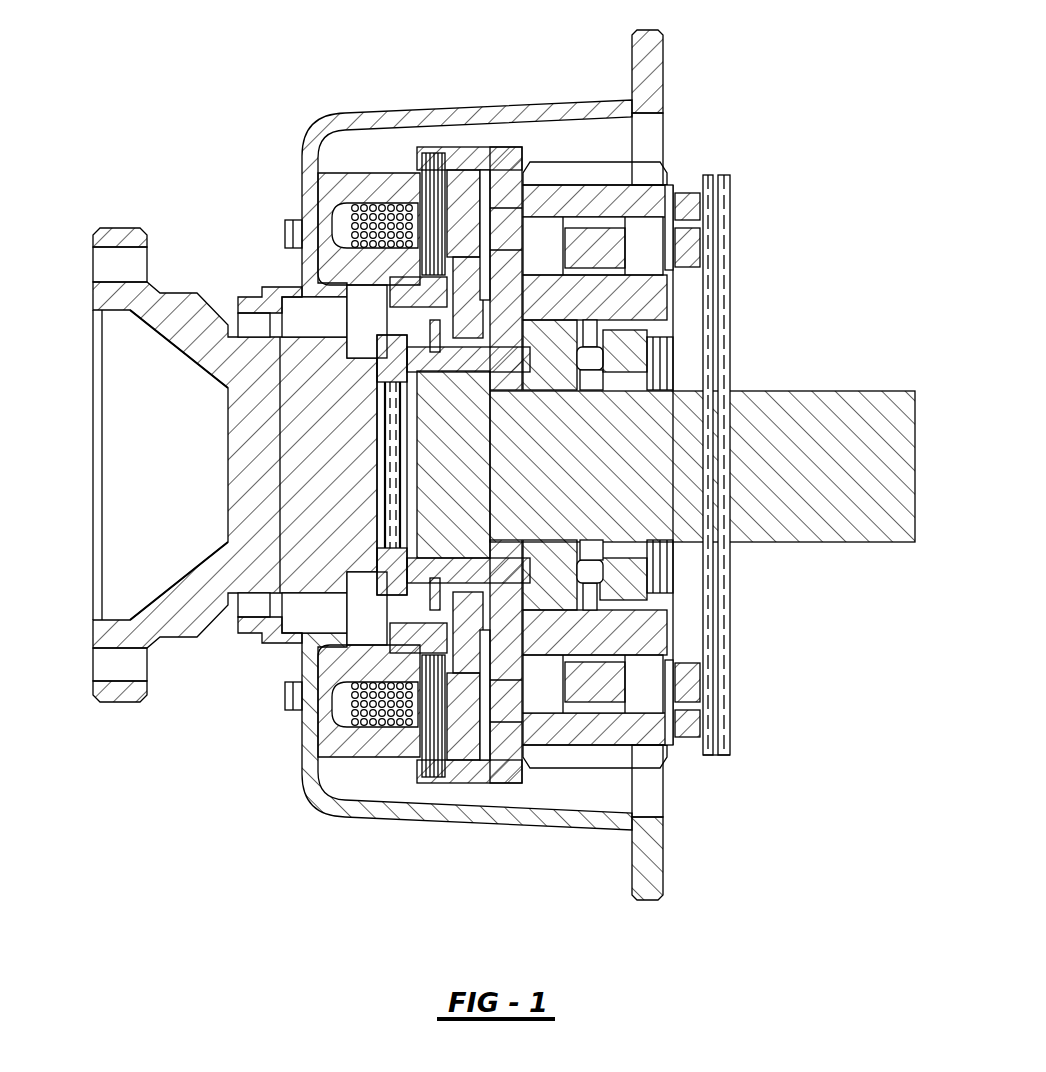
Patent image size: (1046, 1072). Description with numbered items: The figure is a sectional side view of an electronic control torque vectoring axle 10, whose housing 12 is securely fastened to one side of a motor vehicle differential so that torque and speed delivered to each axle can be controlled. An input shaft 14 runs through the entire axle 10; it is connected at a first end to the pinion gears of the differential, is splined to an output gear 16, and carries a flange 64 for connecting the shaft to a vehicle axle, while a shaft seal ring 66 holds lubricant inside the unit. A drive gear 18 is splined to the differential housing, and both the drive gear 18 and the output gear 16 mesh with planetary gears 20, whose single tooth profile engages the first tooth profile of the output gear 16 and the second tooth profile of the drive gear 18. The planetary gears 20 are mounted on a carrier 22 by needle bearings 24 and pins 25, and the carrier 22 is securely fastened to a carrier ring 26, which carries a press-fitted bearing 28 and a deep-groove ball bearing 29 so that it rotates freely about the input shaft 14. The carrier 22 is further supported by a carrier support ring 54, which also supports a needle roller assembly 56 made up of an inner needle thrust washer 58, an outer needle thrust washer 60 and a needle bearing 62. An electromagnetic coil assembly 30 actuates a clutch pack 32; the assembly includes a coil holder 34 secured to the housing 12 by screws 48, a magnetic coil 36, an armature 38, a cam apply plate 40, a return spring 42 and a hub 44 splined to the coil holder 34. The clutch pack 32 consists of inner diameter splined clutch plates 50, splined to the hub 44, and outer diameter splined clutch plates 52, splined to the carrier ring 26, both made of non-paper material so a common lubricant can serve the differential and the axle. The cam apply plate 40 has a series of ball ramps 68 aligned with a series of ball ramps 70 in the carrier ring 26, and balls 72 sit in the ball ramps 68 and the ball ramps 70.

The electronic control torque vectoring axle 10 is at (569, 426).
The housing 12 is at (648, 65).
The input shaft 14 is at (887, 410).
The output gear 16 is at (557, 560).
The drive gear 18 is at (633, 578).
The planetary gears 20 is at (617, 180).
The carrier 22 is at (693, 690).
The needle bearings 24 is at (645, 680).
The pins 25 is at (690, 250).
The carrier ring 26 is at (495, 155).
The bearing 28 is at (437, 483).
The deep-groove ball bearing 29 is at (310, 493).
The electromagnetic coil assembly 30 is at (393, 158).
The clutch pack 32 is at (408, 187).
The coil holder 34 is at (353, 737).
The magnetic coil 36 is at (353, 228).
The armature 38 is at (465, 738).
The cam apply plate 40 is at (460, 187).
The return spring 42 is at (438, 318).
The hub 44 is at (395, 628).
The screws 48 is at (280, 233).
The inner diameter splined clutch plates 50 is at (357, 687).
The outer diameter splined clutch plates 52 is at (435, 740).
The carrier support ring 54 is at (688, 717).
The needle roller assembly 56 is at (777, 525).
The inner needle thrust washer 58 is at (714, 762).
The outer needle thrust washer 60 is at (713, 740).
The needle bearing 62 is at (714, 748).
The flange 64 is at (112, 635).
The shaft seal ring 66 is at (253, 327).
The ball ramps 68 is at (465, 322).
The ball ramps 70 is at (490, 623).
The balls 72 is at (573, 392).